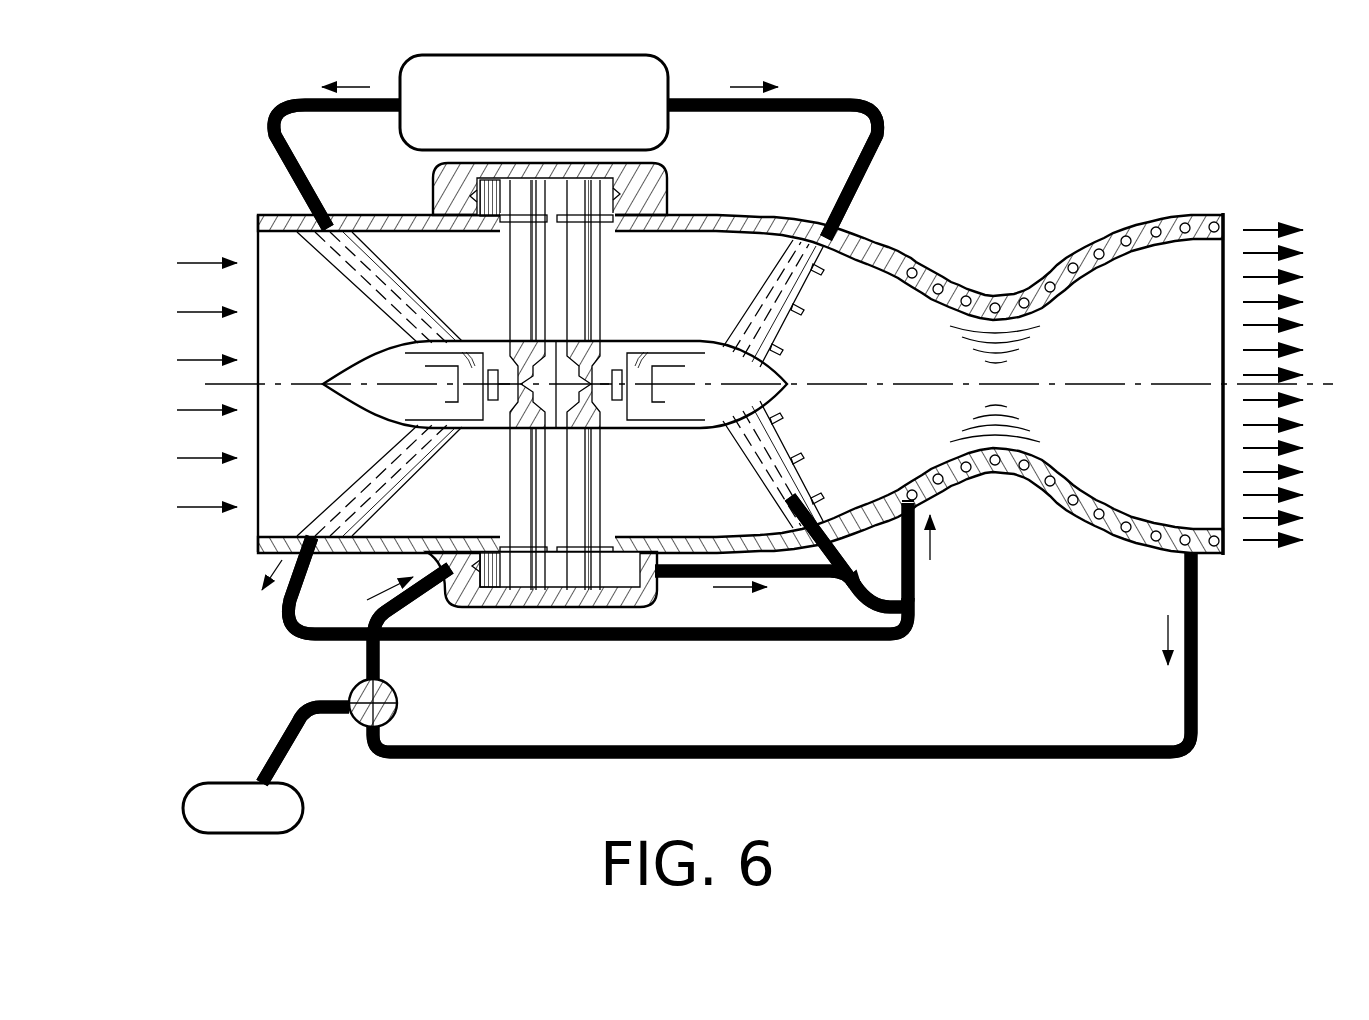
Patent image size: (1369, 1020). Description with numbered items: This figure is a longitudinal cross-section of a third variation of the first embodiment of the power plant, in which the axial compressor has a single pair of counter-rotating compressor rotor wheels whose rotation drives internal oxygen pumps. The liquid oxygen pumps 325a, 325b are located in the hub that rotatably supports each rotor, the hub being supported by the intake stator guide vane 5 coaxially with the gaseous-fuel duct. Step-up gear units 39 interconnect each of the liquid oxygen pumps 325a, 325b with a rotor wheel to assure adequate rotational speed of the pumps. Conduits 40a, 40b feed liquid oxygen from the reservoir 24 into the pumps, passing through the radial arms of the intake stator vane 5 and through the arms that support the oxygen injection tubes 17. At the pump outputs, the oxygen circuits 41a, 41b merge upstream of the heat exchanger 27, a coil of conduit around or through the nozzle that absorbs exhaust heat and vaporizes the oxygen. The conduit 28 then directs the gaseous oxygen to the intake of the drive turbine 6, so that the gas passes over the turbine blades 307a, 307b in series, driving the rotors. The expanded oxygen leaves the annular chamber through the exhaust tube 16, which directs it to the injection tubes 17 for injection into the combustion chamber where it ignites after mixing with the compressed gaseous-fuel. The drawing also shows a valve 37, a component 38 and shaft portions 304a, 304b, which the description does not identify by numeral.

The stator guide vane 5 is at (332, 284).
The axial turbine assembly 6 is at (550, 612).
The exhaust tube 16 is at (694, 578).
The injection tubes 17 is at (808, 288).
The reservoir 24 is at (519, 105).
The heat exchanger 27 is at (1040, 490).
The conduit 28 is at (920, 750).
The valve 37 is at (398, 703).
The fuel source 38 is at (227, 822).
The step-up gear units 39 is at (492, 368).
The conduit 40a is at (275, 160).
The conduit 40b is at (848, 190).
The oxygen circuit 41a is at (822, 642).
The oxygen circuit 41b is at (838, 592).
The first shaft 304a is at (520, 494).
The second shaft 304b is at (590, 494).
The turbine blade 307a is at (520, 588).
The turbine blade 307b is at (578, 588).
The liquid oxygen pump 325a is at (459, 396).
The liquid oxygen pump 325b is at (643, 398).